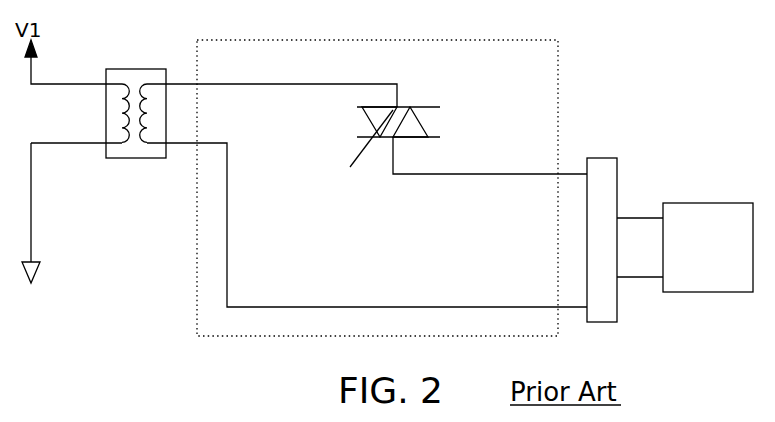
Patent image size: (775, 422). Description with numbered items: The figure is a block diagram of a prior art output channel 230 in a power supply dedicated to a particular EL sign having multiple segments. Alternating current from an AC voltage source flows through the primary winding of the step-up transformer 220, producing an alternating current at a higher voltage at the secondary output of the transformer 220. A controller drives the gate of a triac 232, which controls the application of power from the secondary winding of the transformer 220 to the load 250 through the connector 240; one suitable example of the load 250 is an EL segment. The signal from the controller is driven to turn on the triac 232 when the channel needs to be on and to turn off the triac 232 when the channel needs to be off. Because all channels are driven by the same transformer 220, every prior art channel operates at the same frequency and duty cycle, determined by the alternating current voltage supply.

The step-up transformer 220 is at (135, 158).
The output channel 230 is at (558, 69).
The triac 232 is at (445, 120).
The connector 240 is at (605, 157).
The load 250 is at (727, 287).